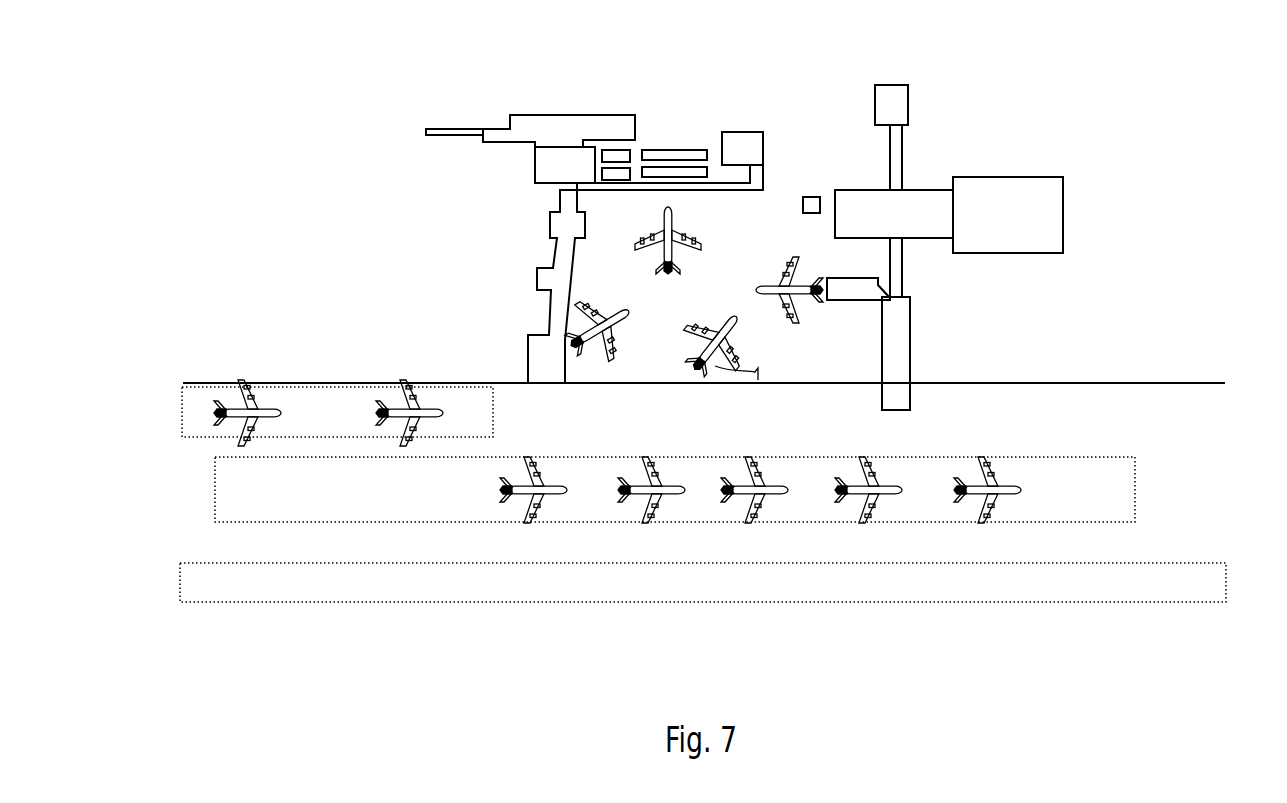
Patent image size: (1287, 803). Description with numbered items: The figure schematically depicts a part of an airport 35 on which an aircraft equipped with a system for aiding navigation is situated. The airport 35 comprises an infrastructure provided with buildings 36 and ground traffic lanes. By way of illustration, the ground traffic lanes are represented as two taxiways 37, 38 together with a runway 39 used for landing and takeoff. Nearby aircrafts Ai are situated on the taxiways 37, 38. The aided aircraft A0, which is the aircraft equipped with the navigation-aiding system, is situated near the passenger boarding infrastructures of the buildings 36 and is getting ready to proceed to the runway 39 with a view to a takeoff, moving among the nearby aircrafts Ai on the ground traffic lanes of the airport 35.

The airport 35 is at (308, 180).
The buildings 36 is at (835, 101).
The taxiway 37 is at (181, 413).
The taxiway 38 is at (214, 492).
The runway 39 is at (1184, 603).
The nearby aircrafts Ai is at (263, 395).
The aided aircraft A0 is at (738, 337).